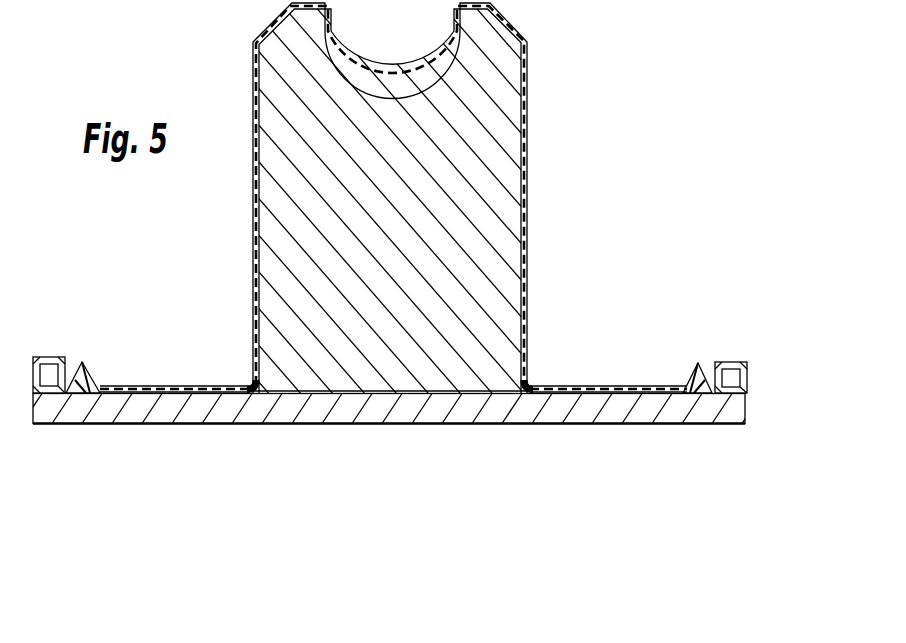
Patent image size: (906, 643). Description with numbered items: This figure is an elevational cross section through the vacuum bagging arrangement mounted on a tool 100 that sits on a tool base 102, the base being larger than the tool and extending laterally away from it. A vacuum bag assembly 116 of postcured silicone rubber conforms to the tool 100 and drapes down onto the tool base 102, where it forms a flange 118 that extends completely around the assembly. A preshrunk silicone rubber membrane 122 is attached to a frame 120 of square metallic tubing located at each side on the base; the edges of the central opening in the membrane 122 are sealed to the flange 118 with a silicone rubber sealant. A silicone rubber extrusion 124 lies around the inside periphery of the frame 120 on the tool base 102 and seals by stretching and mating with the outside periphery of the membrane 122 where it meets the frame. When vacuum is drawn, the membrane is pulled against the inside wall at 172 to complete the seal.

The tool 100 is at (495, 130).
The vacuum bag assembly 116 is at (526, 74).
The tool base 102 is at (48, 423).
The flange 118 is at (241, 393).
The frame 120 is at (40, 356).
The silicone rubber membrane 122 is at (125, 386).
The silicone rubber extrusion 124 is at (88, 366).
The inside wall 172 is at (694, 392).